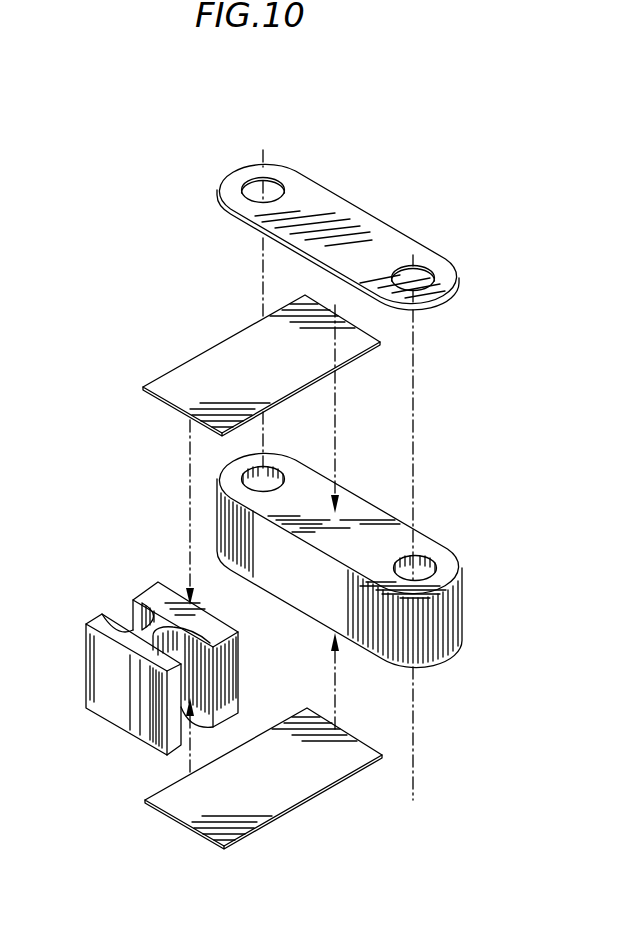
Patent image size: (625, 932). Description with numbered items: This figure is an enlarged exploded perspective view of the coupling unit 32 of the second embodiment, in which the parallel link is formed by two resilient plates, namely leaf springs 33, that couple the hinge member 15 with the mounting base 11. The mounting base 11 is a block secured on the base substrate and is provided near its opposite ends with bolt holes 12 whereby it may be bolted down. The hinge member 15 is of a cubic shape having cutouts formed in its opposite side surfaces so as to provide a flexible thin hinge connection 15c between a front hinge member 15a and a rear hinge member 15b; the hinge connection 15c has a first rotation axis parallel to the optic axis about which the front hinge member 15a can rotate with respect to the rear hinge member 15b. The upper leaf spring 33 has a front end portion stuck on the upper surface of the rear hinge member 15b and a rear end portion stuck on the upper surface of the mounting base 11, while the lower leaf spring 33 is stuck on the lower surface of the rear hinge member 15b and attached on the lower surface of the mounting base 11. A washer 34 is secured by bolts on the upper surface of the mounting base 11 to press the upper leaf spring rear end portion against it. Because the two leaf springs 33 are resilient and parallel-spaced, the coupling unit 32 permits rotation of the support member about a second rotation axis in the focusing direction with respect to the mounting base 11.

The mounting base 11 is at (358, 505).
The bolt holes 12 is at (271, 480).
The hinge member 15 is at (172, 665).
The front hinge member 15a is at (108, 712).
The rear hinge member 15b is at (228, 666).
The hinge connection 15c is at (131, 607).
The coupling unit 32 is at (462, 513).
The leaf springs 33 is at (225, 348).
The washer 34 is at (372, 222).